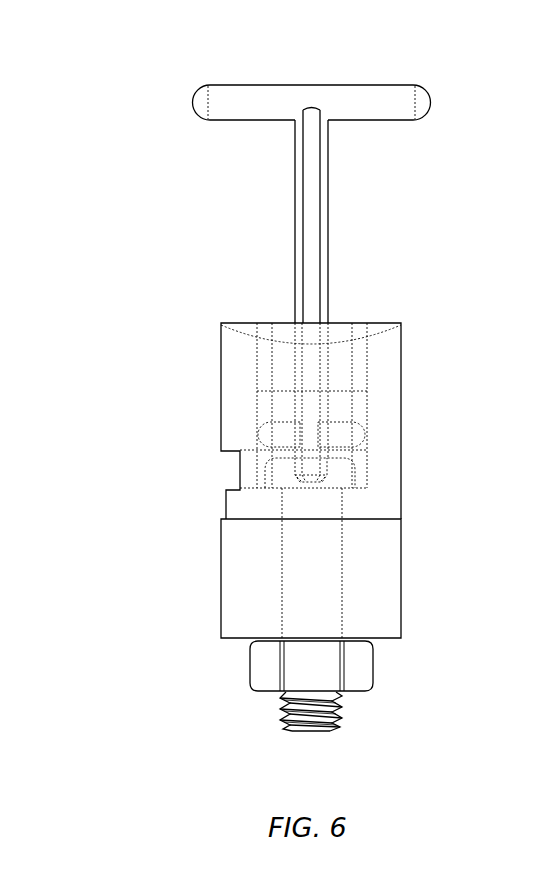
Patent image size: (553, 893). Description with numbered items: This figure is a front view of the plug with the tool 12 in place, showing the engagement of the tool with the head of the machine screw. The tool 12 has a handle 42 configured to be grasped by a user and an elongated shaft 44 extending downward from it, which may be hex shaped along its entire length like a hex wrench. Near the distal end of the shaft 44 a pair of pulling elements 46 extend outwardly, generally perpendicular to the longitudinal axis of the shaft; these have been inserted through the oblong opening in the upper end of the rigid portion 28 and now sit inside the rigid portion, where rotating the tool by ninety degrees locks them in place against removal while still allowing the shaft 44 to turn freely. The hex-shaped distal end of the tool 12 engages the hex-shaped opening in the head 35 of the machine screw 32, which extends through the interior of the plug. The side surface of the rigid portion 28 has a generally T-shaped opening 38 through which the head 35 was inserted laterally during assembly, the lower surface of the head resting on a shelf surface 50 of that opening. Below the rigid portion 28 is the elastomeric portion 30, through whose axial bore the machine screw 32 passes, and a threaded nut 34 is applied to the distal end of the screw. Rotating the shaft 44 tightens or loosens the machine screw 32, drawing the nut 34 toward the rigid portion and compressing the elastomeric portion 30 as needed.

The tool 12 is at (234, 207).
The handle 42 is at (322, 85).
The elongated shaft 44 is at (328, 233).
The rigid portion 28 is at (401, 467).
The pulling elements 46 is at (277, 417).
The head 35 is at (345, 480).
The T-shaped opening 38 is at (221, 462).
The shelf surface 50 is at (243, 488).
The elastomeric portion 30 is at (401, 581).
The machine screw 32 is at (281, 565).
The threaded nut 34 is at (373, 674).